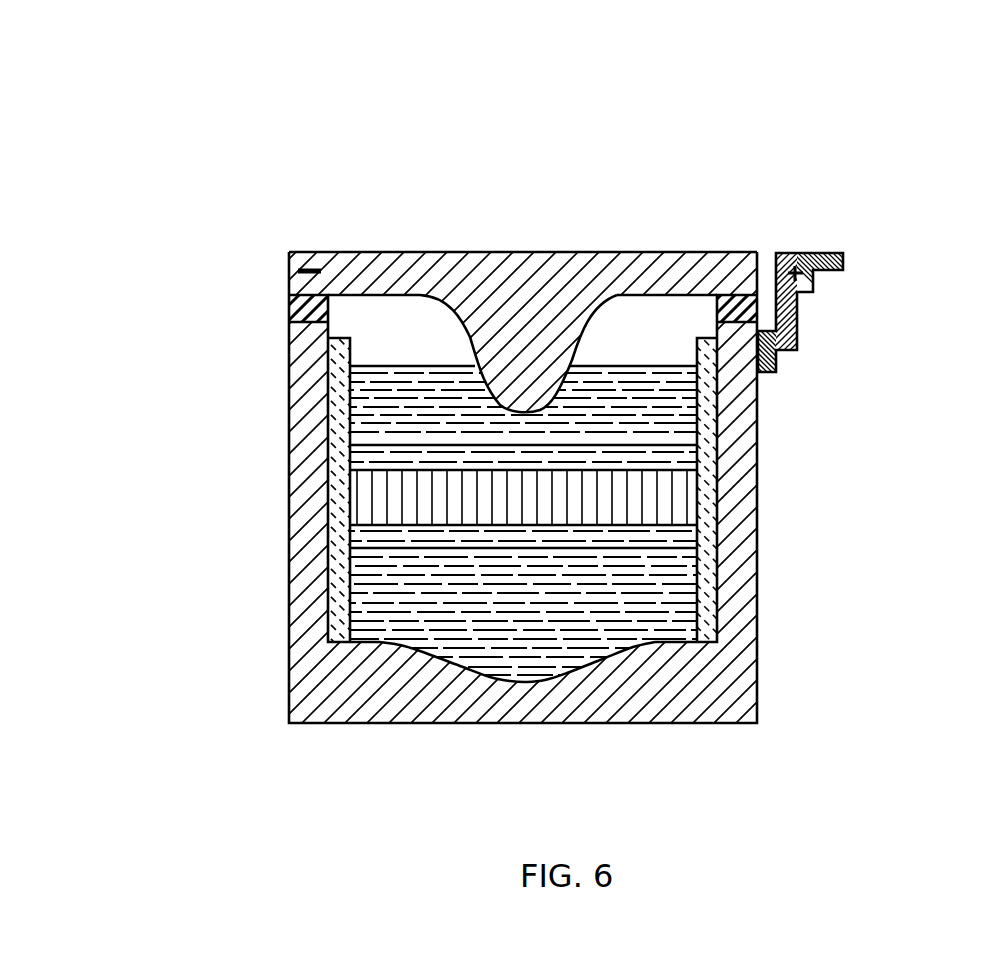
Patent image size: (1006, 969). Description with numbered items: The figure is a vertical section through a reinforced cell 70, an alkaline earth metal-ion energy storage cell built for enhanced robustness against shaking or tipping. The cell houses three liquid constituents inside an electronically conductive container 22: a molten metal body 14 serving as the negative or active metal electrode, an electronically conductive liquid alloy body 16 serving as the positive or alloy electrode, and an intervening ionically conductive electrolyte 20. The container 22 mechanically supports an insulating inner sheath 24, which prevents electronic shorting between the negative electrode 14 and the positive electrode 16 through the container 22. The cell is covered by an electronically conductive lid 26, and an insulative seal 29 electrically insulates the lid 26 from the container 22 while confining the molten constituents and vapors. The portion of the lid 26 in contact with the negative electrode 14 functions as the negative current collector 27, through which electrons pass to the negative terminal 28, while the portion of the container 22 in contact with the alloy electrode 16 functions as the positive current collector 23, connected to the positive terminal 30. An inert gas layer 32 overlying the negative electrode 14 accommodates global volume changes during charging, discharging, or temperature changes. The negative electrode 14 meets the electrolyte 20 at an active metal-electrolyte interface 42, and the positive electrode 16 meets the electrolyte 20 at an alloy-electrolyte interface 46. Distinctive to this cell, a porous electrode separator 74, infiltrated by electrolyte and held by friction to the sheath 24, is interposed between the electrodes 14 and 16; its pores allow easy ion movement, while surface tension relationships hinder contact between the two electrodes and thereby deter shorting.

The reinforced cell 70 is at (218, 135).
The lid 26 is at (508, 258).
The inert gas layer 32 is at (650, 310).
The positive terminal 30 is at (803, 253).
The negative terminal 28 is at (288, 261).
The insulative seal 29 is at (287, 301).
The negative current collector 27 is at (527, 377).
The molten metal body 14 is at (367, 400).
The electrolyte 20 is at (373, 465).
The active metal-electrolyte interface 42 is at (682, 447).
The electrode separator 74 is at (680, 495).
The alloy-electrolyte interface 46 is at (625, 548).
The liquid alloy body 16 is at (377, 590).
The inner sheath 24 is at (713, 573).
The container 22 is at (730, 685).
The positive current collector 23 is at (528, 684).